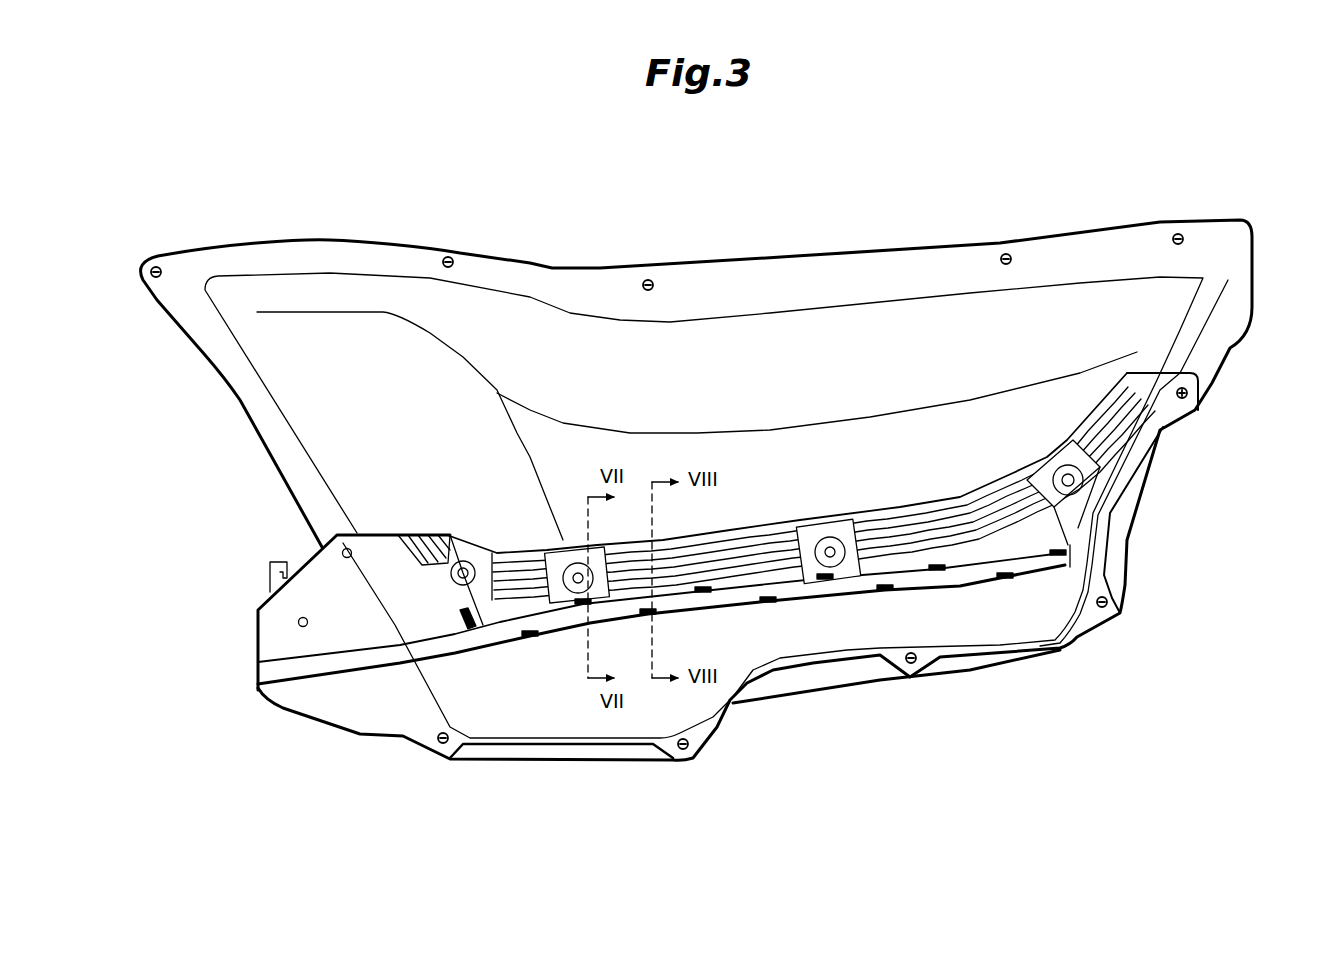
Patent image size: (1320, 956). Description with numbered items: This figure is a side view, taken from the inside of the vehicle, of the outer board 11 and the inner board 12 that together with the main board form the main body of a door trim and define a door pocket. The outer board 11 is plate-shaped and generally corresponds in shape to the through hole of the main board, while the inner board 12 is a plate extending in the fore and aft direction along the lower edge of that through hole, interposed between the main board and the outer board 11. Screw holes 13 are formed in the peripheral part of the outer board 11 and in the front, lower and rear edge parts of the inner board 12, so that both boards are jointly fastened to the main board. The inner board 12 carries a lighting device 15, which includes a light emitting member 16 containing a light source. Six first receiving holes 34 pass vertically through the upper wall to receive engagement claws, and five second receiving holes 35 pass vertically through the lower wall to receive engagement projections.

The outer board 11 is at (1101, 245).
The inner board 12 is at (362, 720).
The screw holes 13 is at (160, 268).
The lighting device 15 is at (236, 554).
The light emitting member 16 is at (270, 578).
The first receiving hole 34 is at (571, 573).
The second receiving hole 35 is at (639, 620).